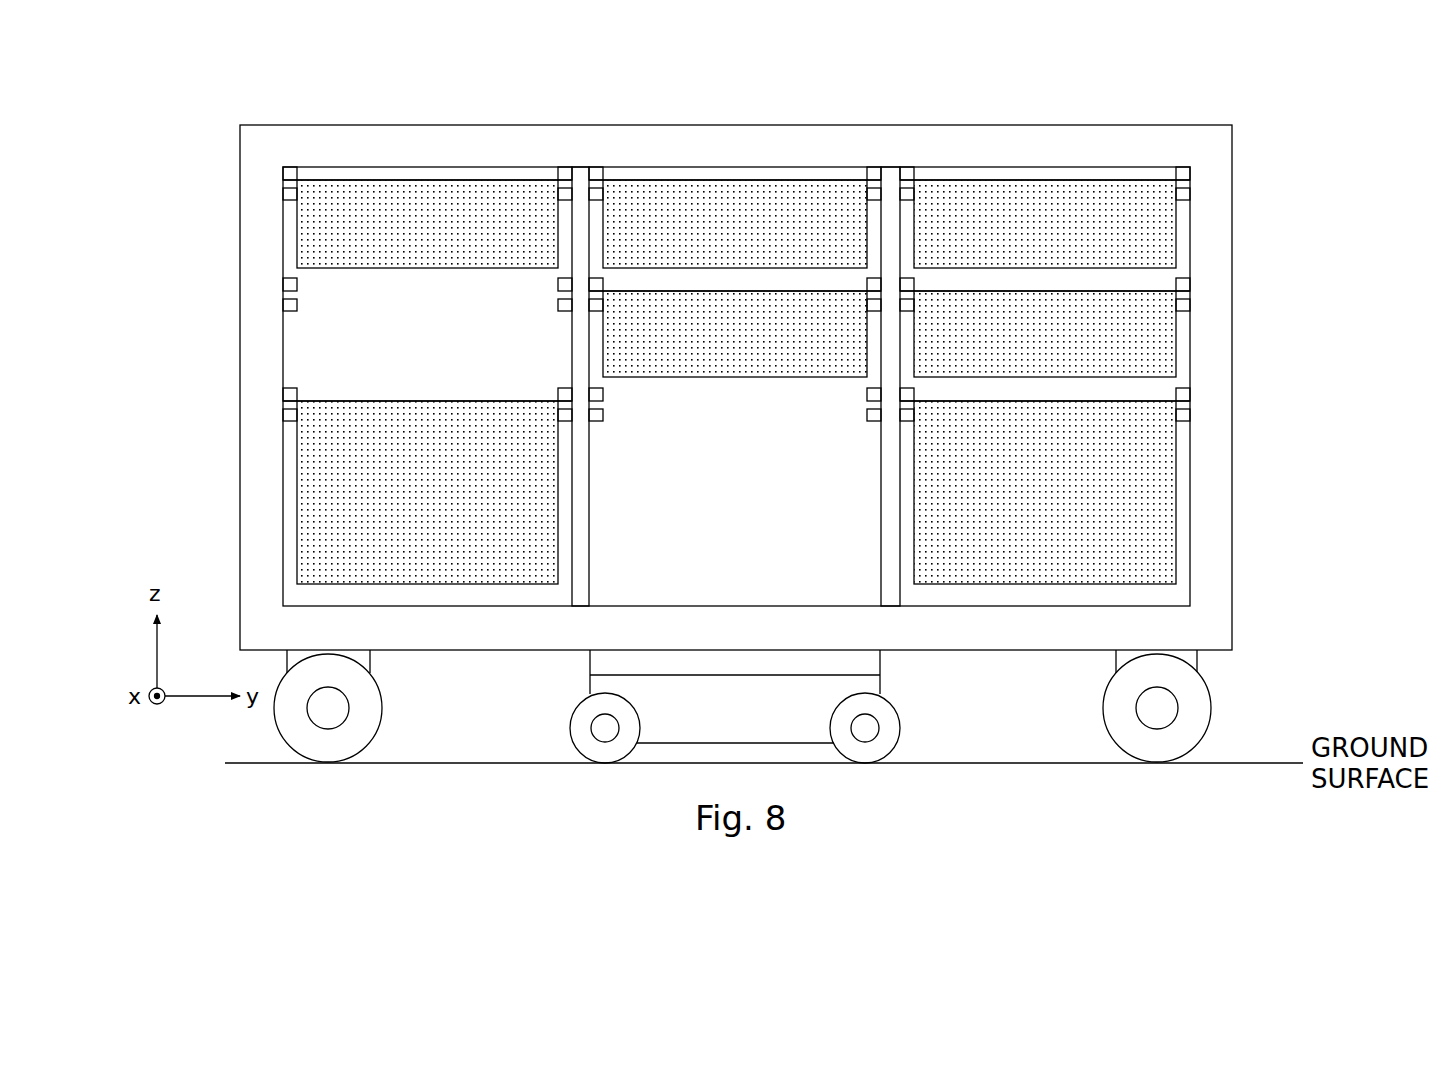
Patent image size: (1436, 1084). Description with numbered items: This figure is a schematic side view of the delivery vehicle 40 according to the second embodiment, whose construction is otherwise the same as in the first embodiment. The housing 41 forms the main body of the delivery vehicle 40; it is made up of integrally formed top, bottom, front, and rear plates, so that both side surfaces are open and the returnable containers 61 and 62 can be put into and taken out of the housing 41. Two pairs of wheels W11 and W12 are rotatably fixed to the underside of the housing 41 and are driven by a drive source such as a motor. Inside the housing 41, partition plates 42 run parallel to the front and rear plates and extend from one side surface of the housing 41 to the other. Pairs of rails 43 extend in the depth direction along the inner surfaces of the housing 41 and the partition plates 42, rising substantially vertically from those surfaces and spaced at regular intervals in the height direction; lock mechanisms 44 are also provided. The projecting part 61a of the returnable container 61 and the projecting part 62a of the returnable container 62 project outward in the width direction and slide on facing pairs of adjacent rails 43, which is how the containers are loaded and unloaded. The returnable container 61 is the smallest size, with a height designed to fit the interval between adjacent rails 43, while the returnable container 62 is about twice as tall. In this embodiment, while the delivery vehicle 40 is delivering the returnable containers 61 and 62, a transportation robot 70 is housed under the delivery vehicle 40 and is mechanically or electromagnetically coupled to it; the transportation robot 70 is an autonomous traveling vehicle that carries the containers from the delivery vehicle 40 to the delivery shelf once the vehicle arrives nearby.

The delivery vehicle 40 is at (1229, 100).
The housing 41 is at (333, 137).
The partition plate 42 is at (581, 167).
The rail 43 is at (1192, 197).
The lock mechanism 44 is at (1192, 173).
The returnable container 61 is at (305, 228).
The projecting part 61a is at (284, 185).
The returnable container 62 is at (305, 450).
The projecting part 62a is at (284, 406).
The transportation robot 70 is at (900, 684).
The wheel W11 is at (1211, 717).
The wheel W12 is at (383, 718).